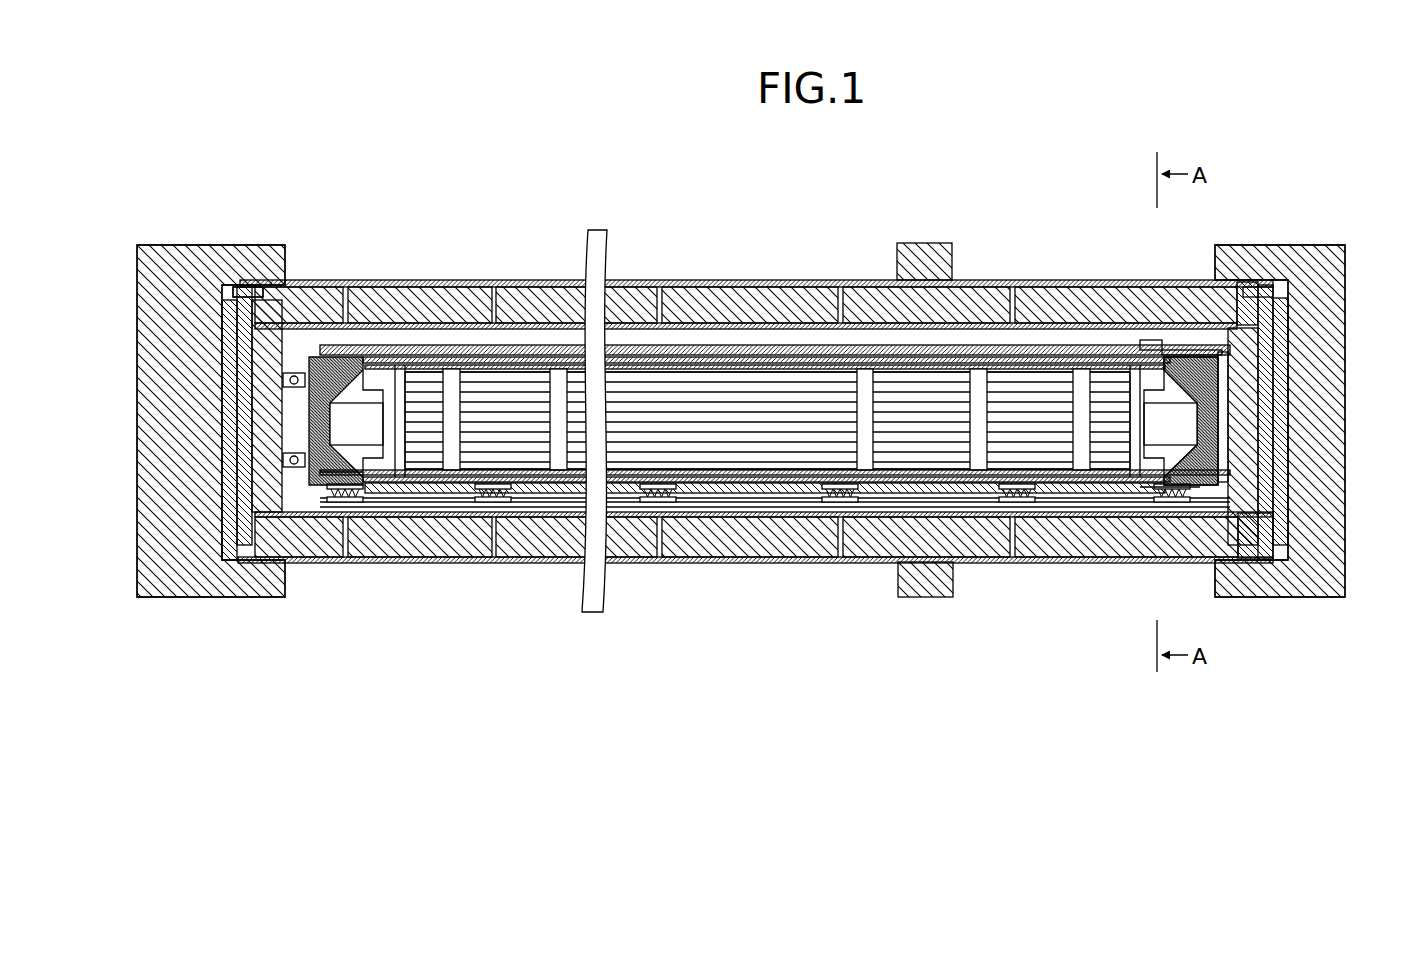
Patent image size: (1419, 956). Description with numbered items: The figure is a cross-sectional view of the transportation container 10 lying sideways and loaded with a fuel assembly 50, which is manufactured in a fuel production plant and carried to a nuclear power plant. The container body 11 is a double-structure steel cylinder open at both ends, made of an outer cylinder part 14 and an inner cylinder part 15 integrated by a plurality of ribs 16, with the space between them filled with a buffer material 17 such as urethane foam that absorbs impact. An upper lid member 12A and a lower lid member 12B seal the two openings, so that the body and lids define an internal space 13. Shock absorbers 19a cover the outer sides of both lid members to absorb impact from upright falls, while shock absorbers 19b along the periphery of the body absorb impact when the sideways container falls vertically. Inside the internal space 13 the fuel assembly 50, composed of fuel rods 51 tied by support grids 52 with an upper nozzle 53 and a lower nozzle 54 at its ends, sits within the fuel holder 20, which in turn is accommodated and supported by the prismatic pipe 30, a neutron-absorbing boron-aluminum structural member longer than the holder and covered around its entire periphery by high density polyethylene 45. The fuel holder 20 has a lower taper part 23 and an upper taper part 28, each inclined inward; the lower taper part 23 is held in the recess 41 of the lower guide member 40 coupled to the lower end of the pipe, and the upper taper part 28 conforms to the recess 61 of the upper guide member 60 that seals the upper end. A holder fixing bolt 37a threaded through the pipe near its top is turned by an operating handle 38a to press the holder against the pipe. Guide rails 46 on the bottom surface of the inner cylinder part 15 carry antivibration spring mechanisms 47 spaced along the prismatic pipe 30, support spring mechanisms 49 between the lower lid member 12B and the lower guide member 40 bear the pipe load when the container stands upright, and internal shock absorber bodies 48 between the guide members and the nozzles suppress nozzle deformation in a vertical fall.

The transportation container 10 is at (662, 652).
The container body 11 is at (1030, 272).
The upper lid member 12A is at (1288, 323).
The lower lid member 12B is at (227, 362).
The internal space 13 is at (302, 407).
The outer cylinder part 14 is at (420, 290).
The inner cylinder part 15 is at (490, 325).
The ribs 16 is at (1020, 540).
The buffer material 17 is at (267, 492).
The shock absorbers 19a is at (155, 405).
The shock absorbers 19b is at (925, 585).
The fuel holder 20 is at (806, 366).
The lower taper part 23 is at (360, 385).
The upper taper part 28 is at (1160, 370).
The prismatic pipe 30 is at (765, 352).
The holder fixing bolt 37a is at (1195, 350).
The operating handle 38a is at (1212, 360).
The lower guide member 40 is at (326, 490).
The recess 41 is at (367, 460).
The high density polyethylene 45 is at (548, 348).
The guide rails 46 is at (745, 497).
The antivibration spring mechanisms 47 is at (516, 508).
The internal shock absorber bodies 48 is at (305, 345).
The support spring mechanisms 49 is at (295, 470).
The fuel assembly 50 is at (640, 380).
The fuel rods 51 is at (728, 410).
The support grids 52 is at (865, 382).
The upper nozzle 53 is at (1143, 373).
The lower nozzle 54 is at (388, 388).
The upper guide member 60 is at (1280, 300).
The recess 61 is at (1185, 480).